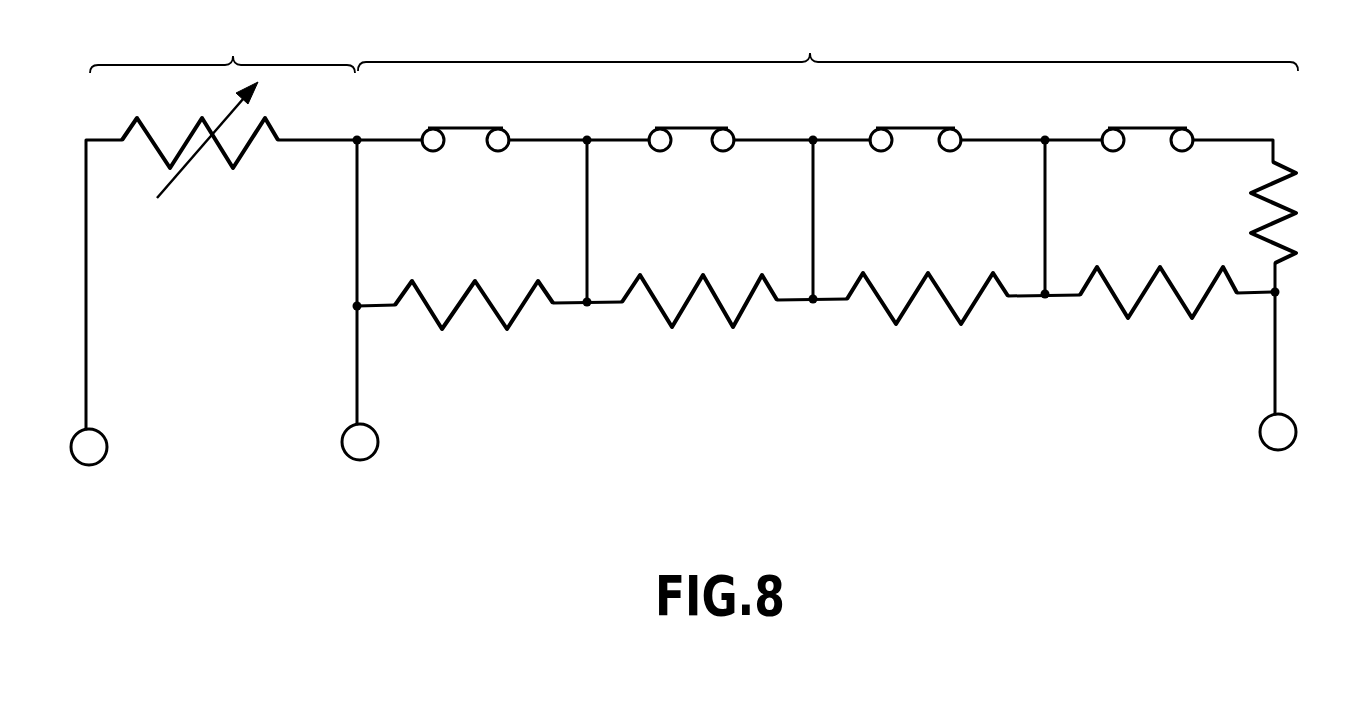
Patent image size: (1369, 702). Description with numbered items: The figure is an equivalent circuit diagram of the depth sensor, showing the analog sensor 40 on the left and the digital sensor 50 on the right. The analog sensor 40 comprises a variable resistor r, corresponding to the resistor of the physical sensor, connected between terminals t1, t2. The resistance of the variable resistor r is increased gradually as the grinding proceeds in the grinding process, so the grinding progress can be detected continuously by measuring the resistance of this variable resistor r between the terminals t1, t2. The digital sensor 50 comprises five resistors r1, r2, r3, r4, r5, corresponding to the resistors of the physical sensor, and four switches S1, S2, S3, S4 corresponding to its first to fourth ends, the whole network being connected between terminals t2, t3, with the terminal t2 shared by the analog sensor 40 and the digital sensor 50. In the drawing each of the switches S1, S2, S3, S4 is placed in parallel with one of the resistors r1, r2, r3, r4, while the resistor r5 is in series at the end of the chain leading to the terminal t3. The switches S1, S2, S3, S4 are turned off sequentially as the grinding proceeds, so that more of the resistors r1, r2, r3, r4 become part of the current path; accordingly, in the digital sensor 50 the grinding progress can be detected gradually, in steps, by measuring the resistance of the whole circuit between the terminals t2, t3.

The analog sensor 40 is at (222, 119).
The digital sensor 50 is at (852, 262).
The variable resistor r is at (190, 167).
The switch S1 is at (465, 120).
The switch S2 is at (691, 119).
The switch S3 is at (915, 119).
The switch S4 is at (1147, 117).
The resistor r1 is at (453, 317).
The resistor r2 is at (687, 308).
The resistor r3 is at (908, 308).
The resistor r4 is at (1147, 297).
The resistor r5 is at (1297, 248).
The terminal t1 is at (93, 454).
The terminal t2 is at (363, 452).
The terminal t3 is at (1278, 450).